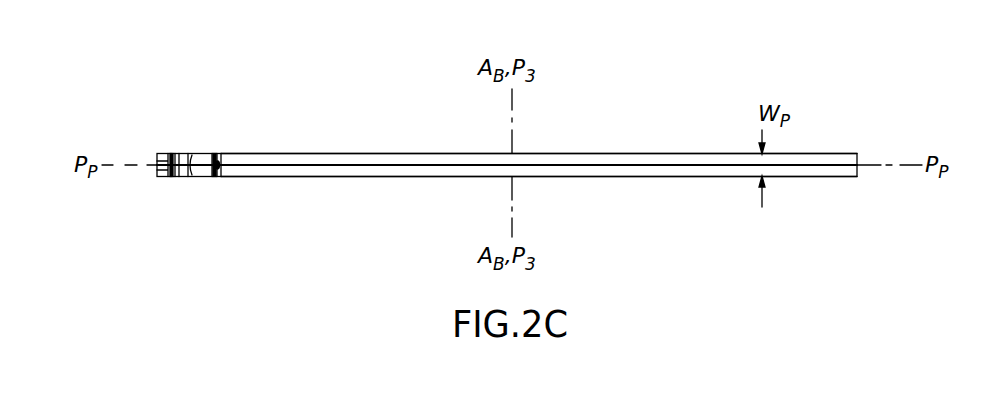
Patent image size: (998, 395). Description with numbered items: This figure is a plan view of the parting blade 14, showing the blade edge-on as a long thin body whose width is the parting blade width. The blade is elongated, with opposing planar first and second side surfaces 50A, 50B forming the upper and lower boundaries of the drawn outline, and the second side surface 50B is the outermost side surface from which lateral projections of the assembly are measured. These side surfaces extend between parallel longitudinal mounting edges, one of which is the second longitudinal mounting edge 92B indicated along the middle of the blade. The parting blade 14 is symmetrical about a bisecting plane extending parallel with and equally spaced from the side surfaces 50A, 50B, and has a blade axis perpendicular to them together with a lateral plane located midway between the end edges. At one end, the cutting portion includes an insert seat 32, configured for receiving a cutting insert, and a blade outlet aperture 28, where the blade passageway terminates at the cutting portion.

The parting blade 14 is at (880, 93).
The insert seat 32 is at (159, 152).
The blade outlet aperture 28 is at (213, 152).
The first side surface 50A is at (303, 152).
The second side surface 50B is at (303, 178).
The second longitudinal mounting edge 92B is at (542, 170).